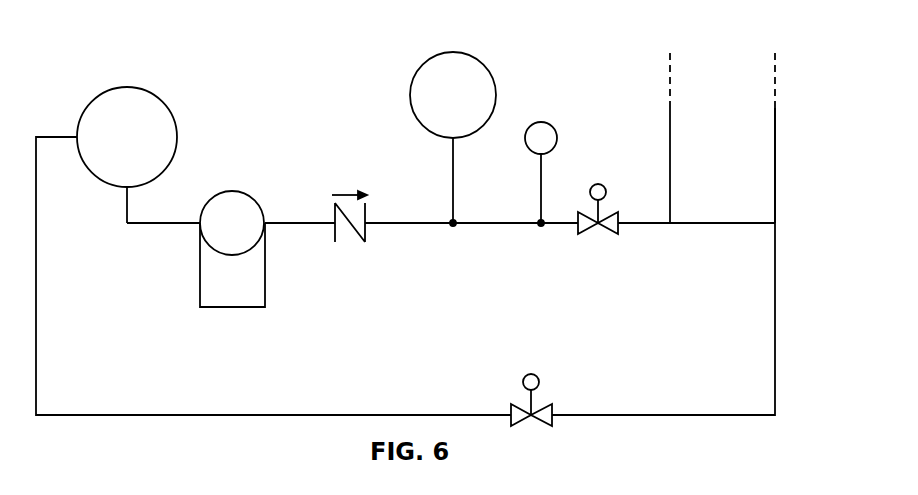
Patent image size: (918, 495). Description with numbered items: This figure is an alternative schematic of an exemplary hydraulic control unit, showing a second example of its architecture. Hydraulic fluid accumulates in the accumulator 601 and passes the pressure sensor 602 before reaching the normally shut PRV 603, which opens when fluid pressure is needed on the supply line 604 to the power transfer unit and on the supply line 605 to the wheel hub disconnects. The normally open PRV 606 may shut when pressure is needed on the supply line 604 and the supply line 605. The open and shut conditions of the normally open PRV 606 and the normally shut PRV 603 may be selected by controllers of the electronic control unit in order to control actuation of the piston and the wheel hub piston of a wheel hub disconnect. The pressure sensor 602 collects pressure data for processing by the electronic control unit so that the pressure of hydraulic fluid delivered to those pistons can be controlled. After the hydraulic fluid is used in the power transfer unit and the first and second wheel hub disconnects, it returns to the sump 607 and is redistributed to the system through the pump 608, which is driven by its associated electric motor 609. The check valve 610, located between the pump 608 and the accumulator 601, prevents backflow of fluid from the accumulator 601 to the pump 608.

The accumulator 601 is at (453, 52).
The pressure sensor 602 is at (541, 122).
The normally shut PRV 603 is at (603, 185).
The supply line 604 is at (670, 173).
The supply line 605 is at (775, 173).
The normally open PRV 606 is at (536, 374).
The sump 607 is at (127, 87).
The pump 608 is at (232, 191).
The electric motor 609 is at (232, 307).
The check valve 610 is at (365, 232).